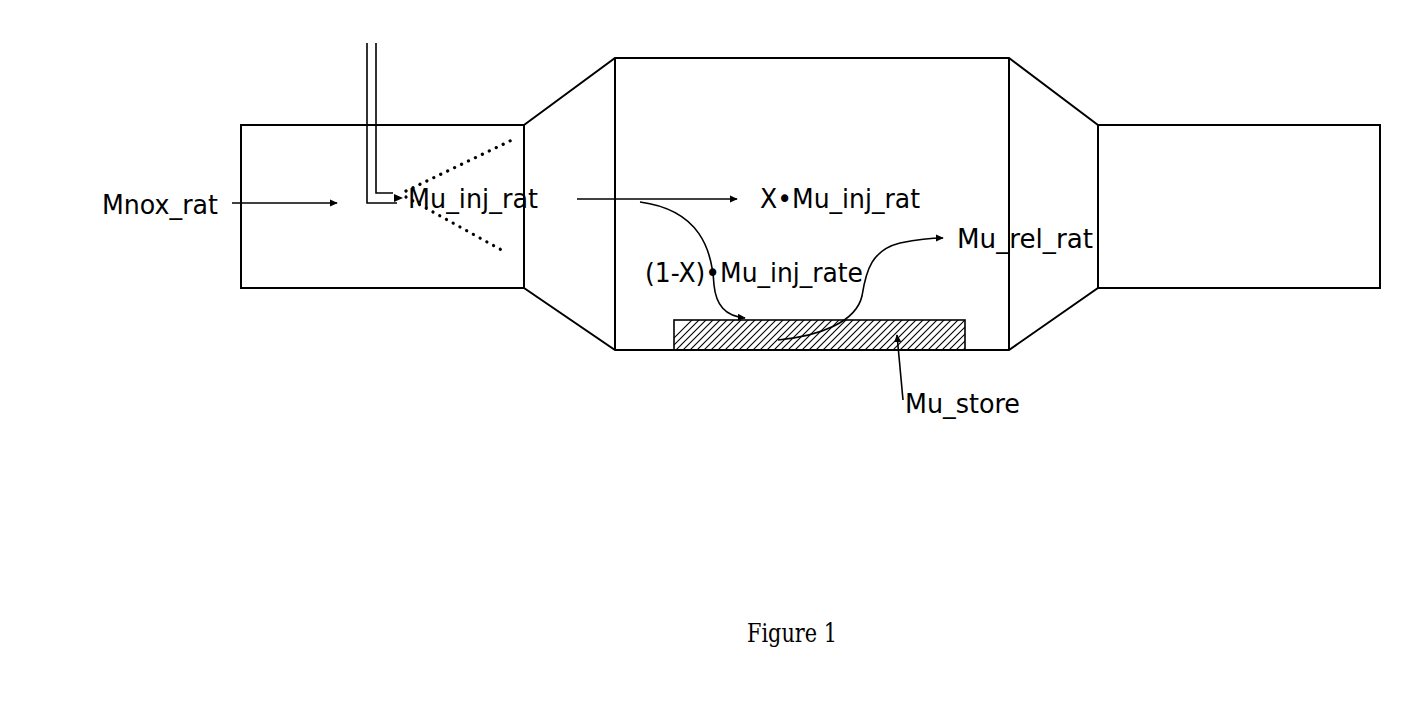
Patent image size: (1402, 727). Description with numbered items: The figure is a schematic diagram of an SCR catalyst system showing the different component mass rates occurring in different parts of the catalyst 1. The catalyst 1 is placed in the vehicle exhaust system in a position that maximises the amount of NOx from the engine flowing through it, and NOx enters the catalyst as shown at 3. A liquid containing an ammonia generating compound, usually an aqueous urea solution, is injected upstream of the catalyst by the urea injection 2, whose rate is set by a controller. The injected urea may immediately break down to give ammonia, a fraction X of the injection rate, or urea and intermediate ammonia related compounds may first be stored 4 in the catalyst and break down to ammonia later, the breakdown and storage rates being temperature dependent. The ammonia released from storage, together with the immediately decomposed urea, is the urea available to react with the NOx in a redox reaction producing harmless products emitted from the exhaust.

The catalyst 1 is at (533, 300).
The urea injection 2 is at (375, 100).
The NOx entry 3 is at (233, 242).
The storage of ammonia related compounds 4 is at (690, 337).